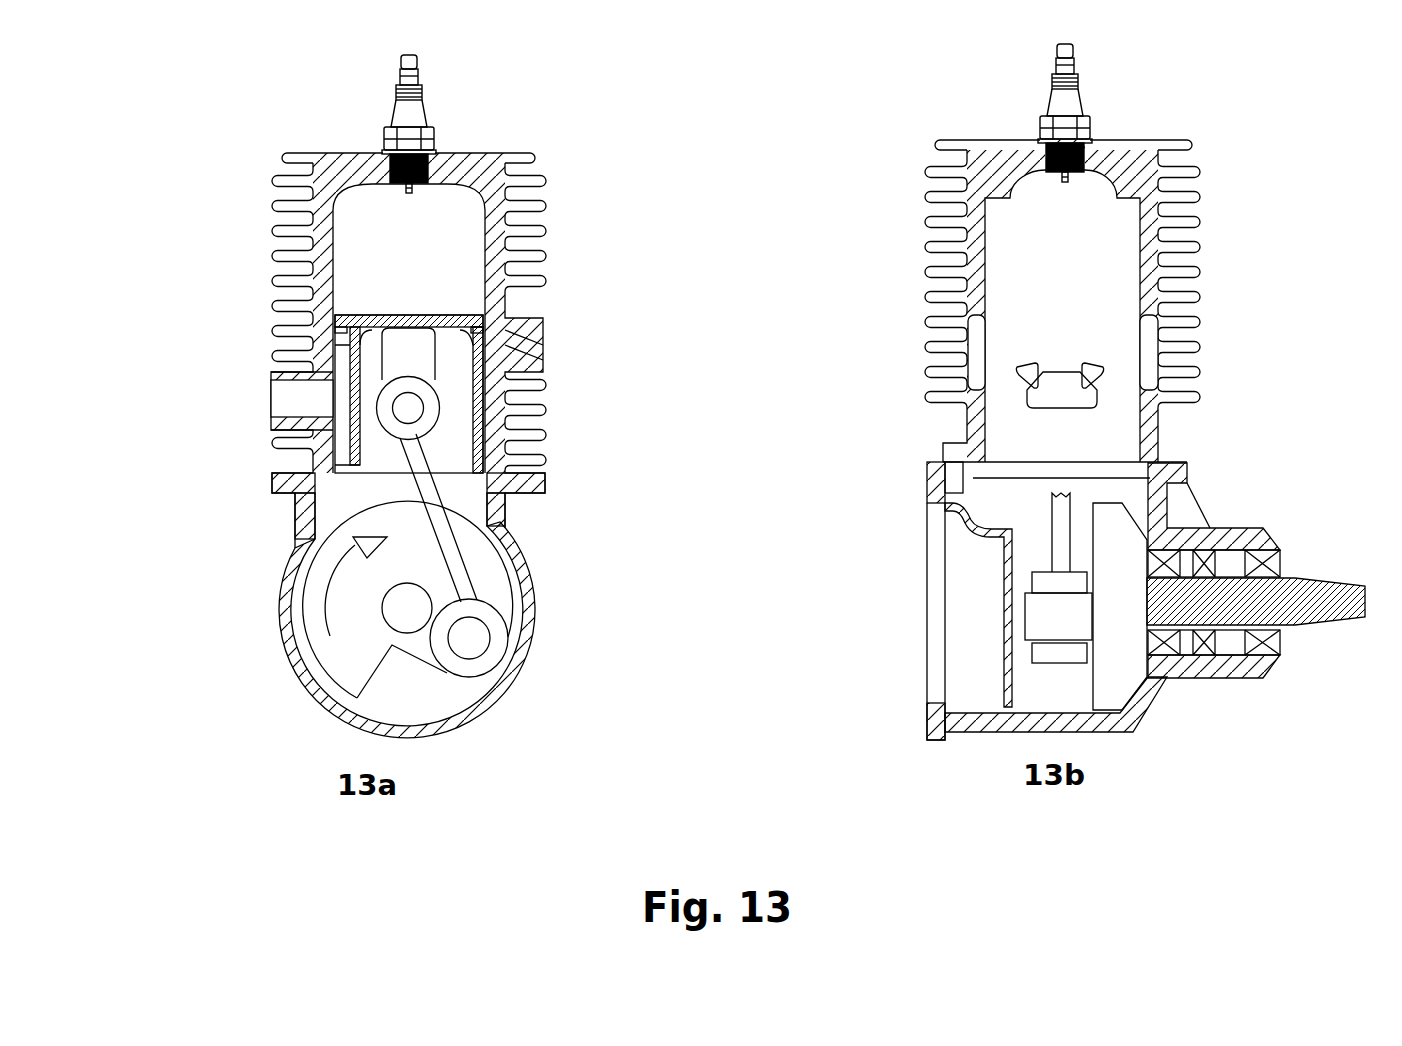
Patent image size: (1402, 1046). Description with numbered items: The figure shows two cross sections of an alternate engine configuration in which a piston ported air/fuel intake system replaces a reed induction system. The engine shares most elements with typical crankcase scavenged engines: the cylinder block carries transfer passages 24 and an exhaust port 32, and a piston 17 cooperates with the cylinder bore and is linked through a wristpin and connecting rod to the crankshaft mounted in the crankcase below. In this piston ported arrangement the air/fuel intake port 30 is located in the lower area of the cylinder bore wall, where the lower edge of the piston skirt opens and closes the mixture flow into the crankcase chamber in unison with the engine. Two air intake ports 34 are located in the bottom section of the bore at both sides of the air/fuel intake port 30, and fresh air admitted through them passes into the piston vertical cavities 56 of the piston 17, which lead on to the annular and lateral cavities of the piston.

The piston 17 is at (435, 316).
The transfer passages 24 is at (975, 363).
The air/fuel intake port 30 is at (307, 397).
The exhaust port 32 is at (490, 335).
The air intake ports 34 is at (1017, 368).
The piston vertical cavities 56 is at (343, 385).